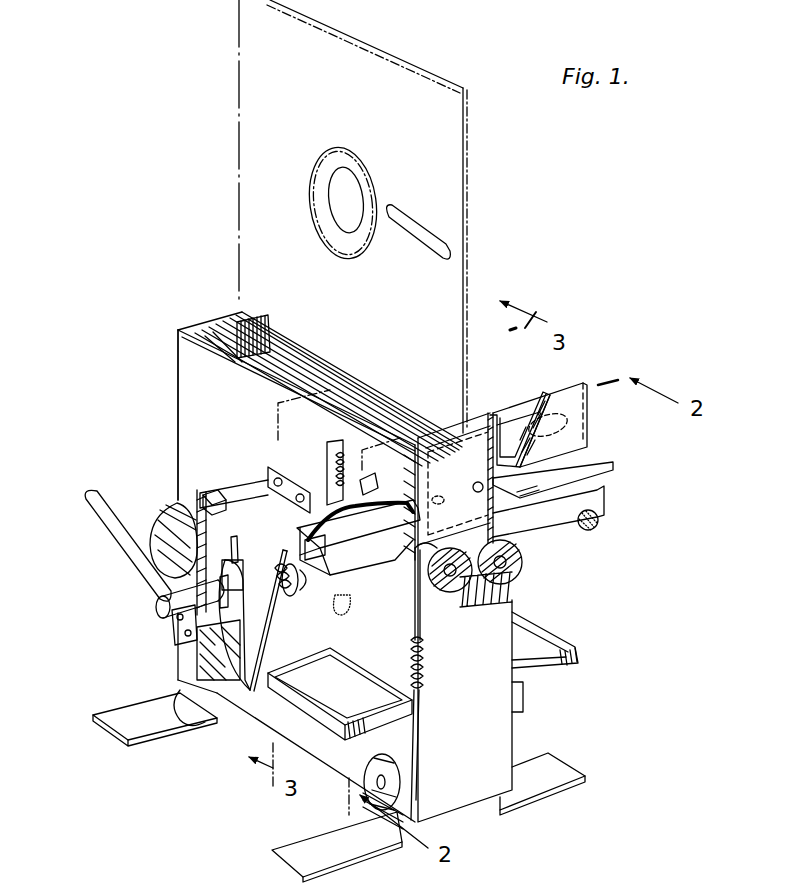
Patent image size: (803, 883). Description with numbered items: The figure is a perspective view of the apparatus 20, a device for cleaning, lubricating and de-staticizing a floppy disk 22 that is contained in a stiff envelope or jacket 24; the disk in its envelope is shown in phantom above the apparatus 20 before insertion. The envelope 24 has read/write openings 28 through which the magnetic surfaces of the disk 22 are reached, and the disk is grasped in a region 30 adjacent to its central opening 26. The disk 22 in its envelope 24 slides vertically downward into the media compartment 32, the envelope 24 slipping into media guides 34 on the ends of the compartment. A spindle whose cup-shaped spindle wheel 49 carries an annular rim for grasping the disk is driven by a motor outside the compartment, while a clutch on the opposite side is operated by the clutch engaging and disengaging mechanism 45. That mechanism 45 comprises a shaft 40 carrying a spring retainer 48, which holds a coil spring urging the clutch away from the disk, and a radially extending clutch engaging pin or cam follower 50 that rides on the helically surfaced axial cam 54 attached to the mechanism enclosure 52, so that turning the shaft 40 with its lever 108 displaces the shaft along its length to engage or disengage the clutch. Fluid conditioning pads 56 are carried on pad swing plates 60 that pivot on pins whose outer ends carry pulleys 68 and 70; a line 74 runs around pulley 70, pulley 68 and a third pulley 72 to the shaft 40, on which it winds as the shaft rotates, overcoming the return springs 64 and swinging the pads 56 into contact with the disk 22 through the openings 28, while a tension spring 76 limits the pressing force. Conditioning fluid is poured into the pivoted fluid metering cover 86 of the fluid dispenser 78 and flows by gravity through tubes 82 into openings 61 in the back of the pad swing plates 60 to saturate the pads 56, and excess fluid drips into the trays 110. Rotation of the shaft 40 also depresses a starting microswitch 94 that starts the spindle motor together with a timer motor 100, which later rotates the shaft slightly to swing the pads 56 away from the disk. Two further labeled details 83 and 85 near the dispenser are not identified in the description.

The apparatus 20 is at (160, 405).
The floppy disk 22 is at (238, 46).
The envelope or jacket 24 is at (315, 36).
The central opening 26 is at (357, 190).
The read/write openings 28 is at (447, 256).
The region adjacent to central opening 30 is at (335, 156).
The media compartment 32 is at (178, 336).
The media guides 34 is at (225, 328).
The shaft 40 is at (160, 610).
The clutch engaging and disengaging mechanism 45 is at (203, 653).
The spring retainer 48 is at (253, 590).
The spindle wheel 49 is at (287, 593).
The clutch engaging pin or cam follower 50 is at (162, 590).
The mechanism enclosure 52 is at (200, 677).
The axial cam 54 is at (262, 560).
The fluid conditioning pads 56 is at (598, 523).
The pad swing plates 60 is at (374, 575).
The openings in pad swing plates 61 is at (325, 553).
The return springs 64 is at (337, 466).
The pulley 68 is at (462, 584).
The pulley 70 is at (513, 567).
The third pulley 72 is at (413, 790).
The line 74 is at (421, 613).
The tension spring 76 is at (425, 682).
The fluid dispenser 78 is at (558, 520).
The tubes 82 is at (390, 513).
The guide funnel 83 is at (502, 425).
The guide opening 85 is at (527, 433).
The pivoted fluid metering cover 86 is at (568, 440).
The starting microswitch 94 is at (205, 493).
The timer motor 100 is at (174, 500).
The lever 108 is at (100, 511).
The trays 110 is at (578, 656).